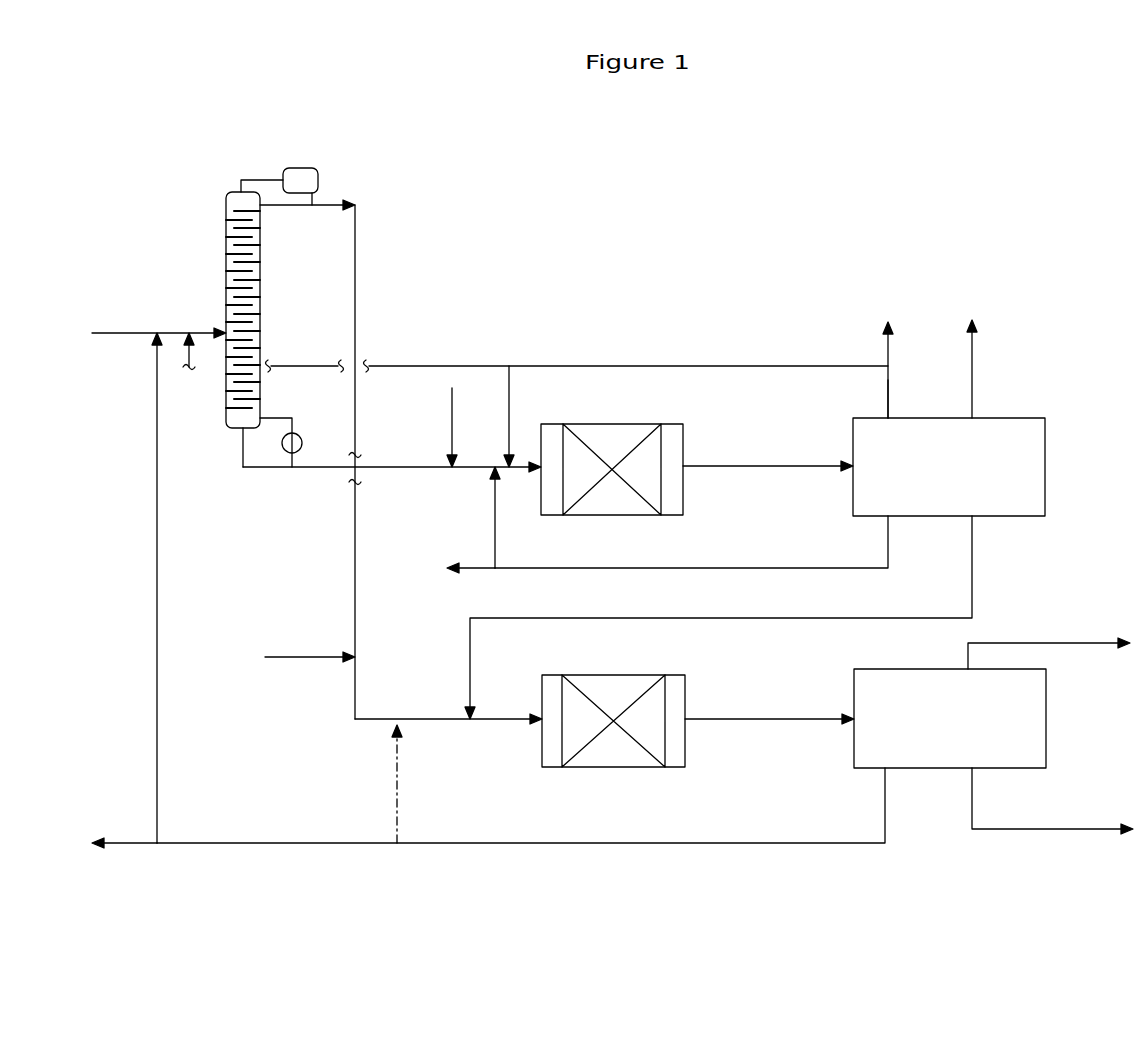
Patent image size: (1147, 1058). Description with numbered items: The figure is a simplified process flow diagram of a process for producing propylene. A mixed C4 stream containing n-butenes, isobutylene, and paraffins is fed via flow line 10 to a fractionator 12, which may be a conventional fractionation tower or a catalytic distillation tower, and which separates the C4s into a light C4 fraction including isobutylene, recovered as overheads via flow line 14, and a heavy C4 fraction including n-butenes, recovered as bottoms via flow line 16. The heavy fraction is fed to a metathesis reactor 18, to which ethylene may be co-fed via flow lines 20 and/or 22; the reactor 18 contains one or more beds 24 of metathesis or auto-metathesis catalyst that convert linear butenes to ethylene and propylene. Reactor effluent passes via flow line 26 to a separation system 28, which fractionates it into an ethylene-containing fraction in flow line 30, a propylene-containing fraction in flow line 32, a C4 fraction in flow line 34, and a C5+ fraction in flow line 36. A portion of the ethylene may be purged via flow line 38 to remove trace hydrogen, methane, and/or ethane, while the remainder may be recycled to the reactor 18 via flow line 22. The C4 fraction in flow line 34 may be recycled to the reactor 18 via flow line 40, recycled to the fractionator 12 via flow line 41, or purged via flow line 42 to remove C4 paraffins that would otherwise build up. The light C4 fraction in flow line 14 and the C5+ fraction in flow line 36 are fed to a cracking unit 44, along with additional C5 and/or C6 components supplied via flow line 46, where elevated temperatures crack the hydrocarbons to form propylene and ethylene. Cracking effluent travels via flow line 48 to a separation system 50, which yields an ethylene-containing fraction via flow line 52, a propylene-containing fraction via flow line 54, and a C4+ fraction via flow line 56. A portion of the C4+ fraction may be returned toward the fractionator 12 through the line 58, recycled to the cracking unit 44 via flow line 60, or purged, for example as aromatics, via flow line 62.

The flow line 10 is at (130, 335).
The fractionator 12 is at (224, 200).
The flow line 14 is at (357, 232).
The flow line 16 is at (241, 462).
The metathesis reactor 18 is at (631, 450).
The flow line 20 is at (450, 430).
The flow line 22 is at (490, 540).
The bed 24 is at (615, 440).
The flow line 26 is at (790, 460).
The separation system 28 is at (949, 467).
The flow line 30 is at (770, 560).
The flow line 32 is at (970, 370).
The flow line 34 is at (886, 400).
The flow line 36 is at (970, 590).
The flow line 38 is at (470, 568).
The flow line 40 is at (507, 428).
The flow line 41 is at (190, 372).
The flow line 42 is at (886, 340).
The cracking unit 44 is at (685, 678).
The flow line 46 is at (300, 645).
The flow line 48 is at (785, 715).
The separation system 50 is at (950, 718).
The flow line 52 is at (1090, 640).
The flow line 54 is at (1100, 820).
The flow line 56 is at (815, 838).
The recycle line to column 58 is at (155, 418).
The flow line 60 is at (395, 800).
The flow line 62 is at (120, 830).